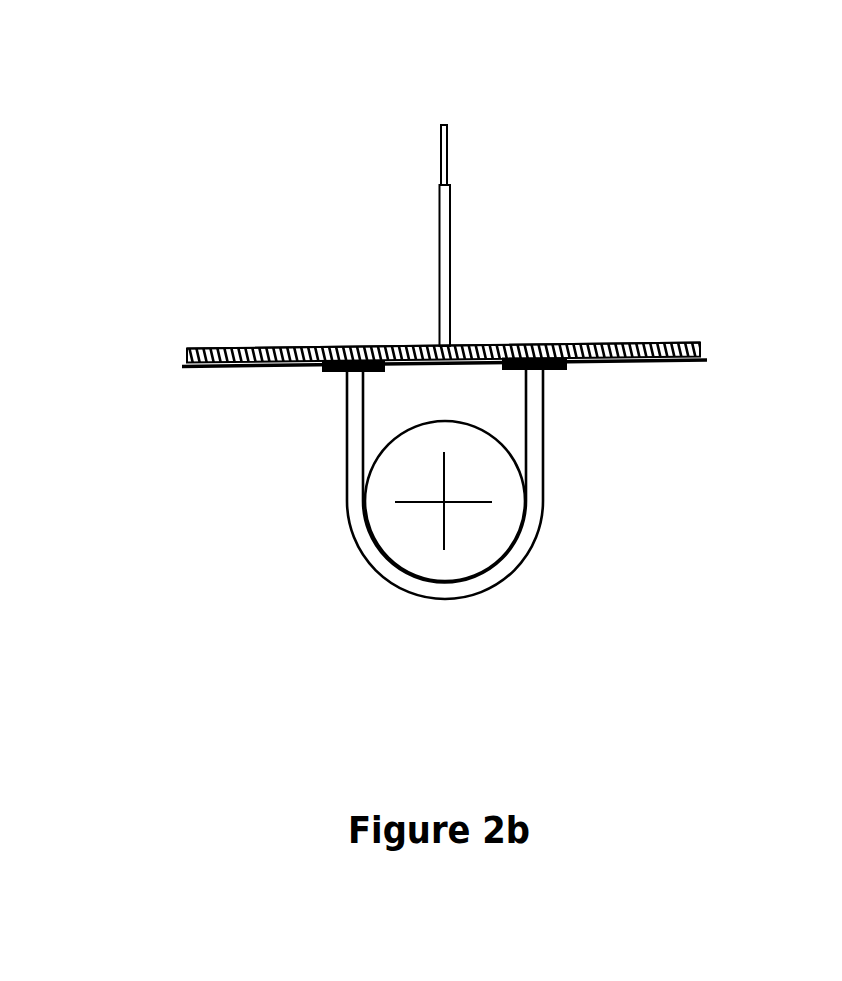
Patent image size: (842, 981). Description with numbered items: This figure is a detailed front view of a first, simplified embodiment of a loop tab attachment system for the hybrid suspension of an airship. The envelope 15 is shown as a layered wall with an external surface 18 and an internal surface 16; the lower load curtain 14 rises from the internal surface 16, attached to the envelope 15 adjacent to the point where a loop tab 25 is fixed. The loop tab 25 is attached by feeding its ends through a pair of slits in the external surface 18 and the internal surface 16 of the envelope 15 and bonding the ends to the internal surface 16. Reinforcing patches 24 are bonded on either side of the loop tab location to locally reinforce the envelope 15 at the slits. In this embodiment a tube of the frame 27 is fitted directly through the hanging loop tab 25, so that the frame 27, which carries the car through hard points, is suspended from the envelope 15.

The lower load curtain 14 is at (469, 136).
The envelope 15 is at (174, 334).
The internal envelope surface 16 is at (593, 319).
The external envelope surface 18 is at (207, 393).
The reinforcing patches 24 is at (311, 398).
The loop tabs 25 is at (325, 515).
The frame 27 is at (490, 547).